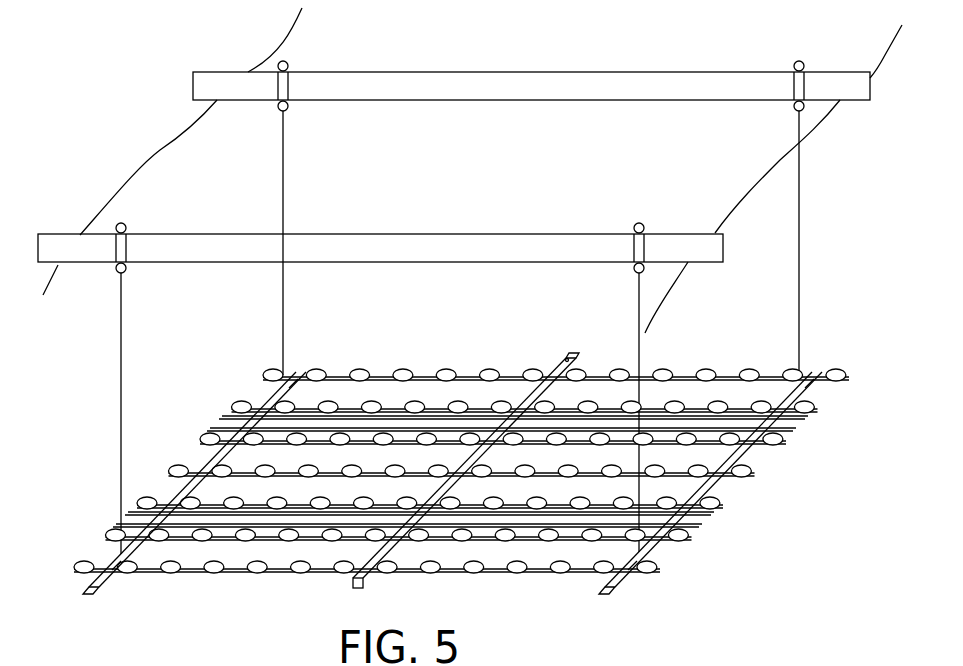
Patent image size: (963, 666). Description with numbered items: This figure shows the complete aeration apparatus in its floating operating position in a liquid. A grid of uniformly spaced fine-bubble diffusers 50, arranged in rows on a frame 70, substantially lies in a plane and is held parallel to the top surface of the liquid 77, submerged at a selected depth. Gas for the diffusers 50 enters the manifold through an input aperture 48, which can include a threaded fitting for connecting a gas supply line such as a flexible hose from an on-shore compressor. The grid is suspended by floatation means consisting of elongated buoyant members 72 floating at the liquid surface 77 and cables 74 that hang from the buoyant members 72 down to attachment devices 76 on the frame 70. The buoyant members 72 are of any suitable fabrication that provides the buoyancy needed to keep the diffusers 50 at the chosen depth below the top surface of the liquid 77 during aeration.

The input aperture 48 is at (567, 357).
The diffusers 50 is at (451, 346).
The frame 70 is at (242, 428).
The buoyant members 72 is at (521, 72).
The cables 74 is at (802, 212).
The attachment devices 76 is at (284, 386).
The top surface of the liquid 77 is at (270, 55).